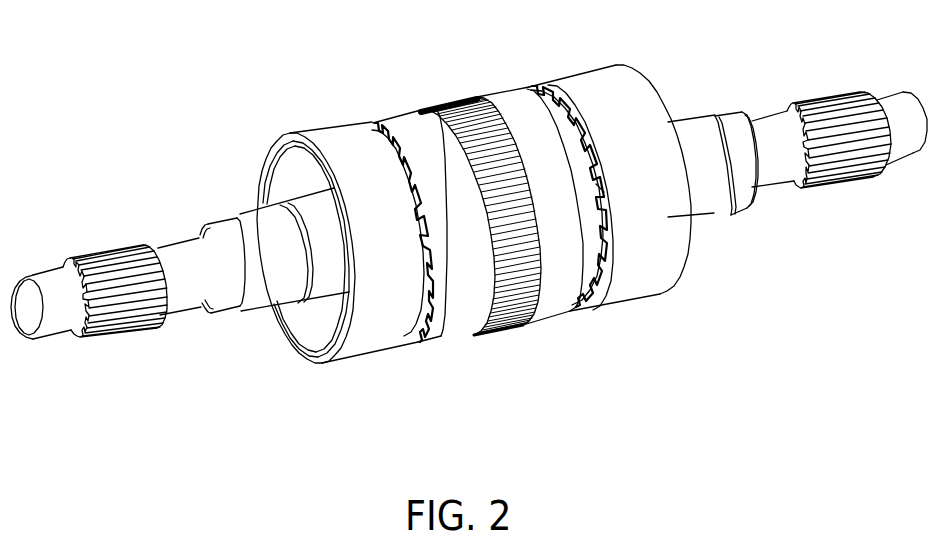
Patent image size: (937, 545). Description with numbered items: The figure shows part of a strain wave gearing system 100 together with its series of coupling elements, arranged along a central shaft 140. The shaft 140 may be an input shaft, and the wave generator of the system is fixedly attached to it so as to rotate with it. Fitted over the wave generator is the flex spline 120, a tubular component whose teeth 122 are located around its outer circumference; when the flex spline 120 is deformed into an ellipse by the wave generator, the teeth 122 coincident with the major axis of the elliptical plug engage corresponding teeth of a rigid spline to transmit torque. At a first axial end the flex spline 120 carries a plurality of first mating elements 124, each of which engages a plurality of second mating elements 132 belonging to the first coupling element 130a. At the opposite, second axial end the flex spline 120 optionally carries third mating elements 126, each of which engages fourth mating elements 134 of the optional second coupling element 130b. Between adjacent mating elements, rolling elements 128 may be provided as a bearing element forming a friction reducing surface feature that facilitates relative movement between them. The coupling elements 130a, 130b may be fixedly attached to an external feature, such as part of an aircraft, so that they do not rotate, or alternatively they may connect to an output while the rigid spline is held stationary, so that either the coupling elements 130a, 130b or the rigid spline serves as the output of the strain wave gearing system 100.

The strain wave gearing system 100 is at (139, 105).
The flex spline 120 is at (560, 267).
The teeth 122 is at (505, 267).
The first mating elements 124 is at (404, 336).
The third mating elements 126 is at (612, 247).
The rolling elements 128 is at (527, 87).
The first coupling element 130a is at (355, 190).
The second coupling element 130b is at (643, 167).
The second mating elements 132 is at (370, 122).
The fourth mating elements 134 is at (600, 188).
The shaft 140 is at (262, 278).